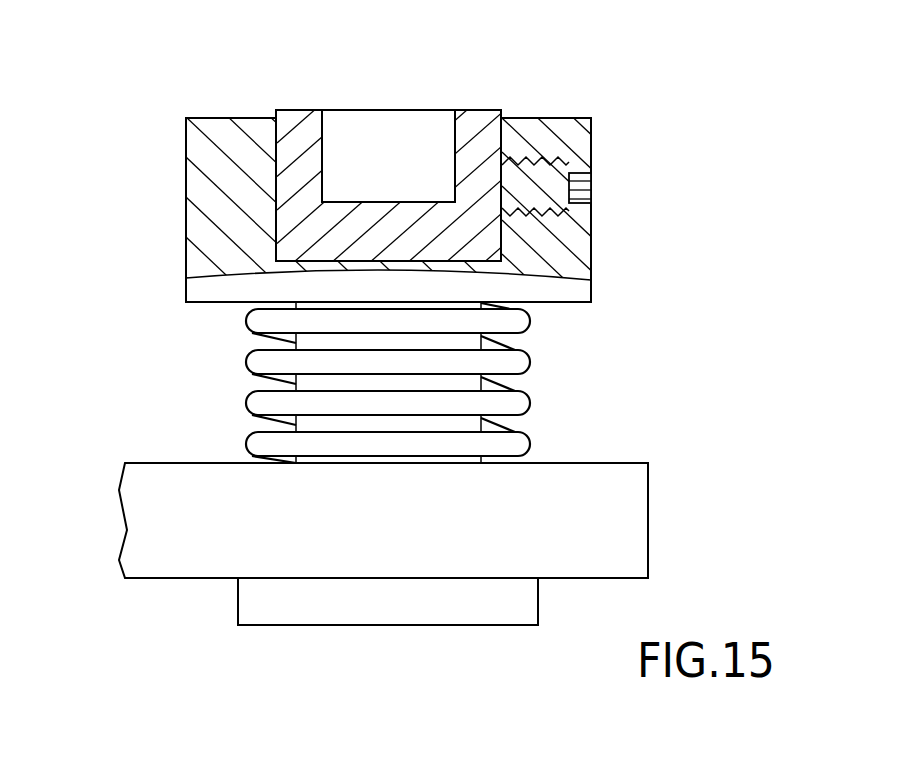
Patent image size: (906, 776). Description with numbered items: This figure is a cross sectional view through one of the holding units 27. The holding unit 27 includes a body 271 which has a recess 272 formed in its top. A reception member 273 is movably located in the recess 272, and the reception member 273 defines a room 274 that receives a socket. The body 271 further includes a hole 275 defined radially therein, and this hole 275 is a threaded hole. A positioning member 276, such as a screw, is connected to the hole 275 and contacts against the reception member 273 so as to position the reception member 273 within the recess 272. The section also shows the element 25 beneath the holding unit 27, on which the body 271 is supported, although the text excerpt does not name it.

The holding unit 27 is at (401, 288).
The body 271 is at (186, 175).
The recess 272 is at (277, 157).
The reception member 273 is at (480, 120).
The room 274 is at (405, 130).
The hole 275 is at (538, 204).
The positioning member 276 is at (592, 168).
The support base 25 is at (619, 463).